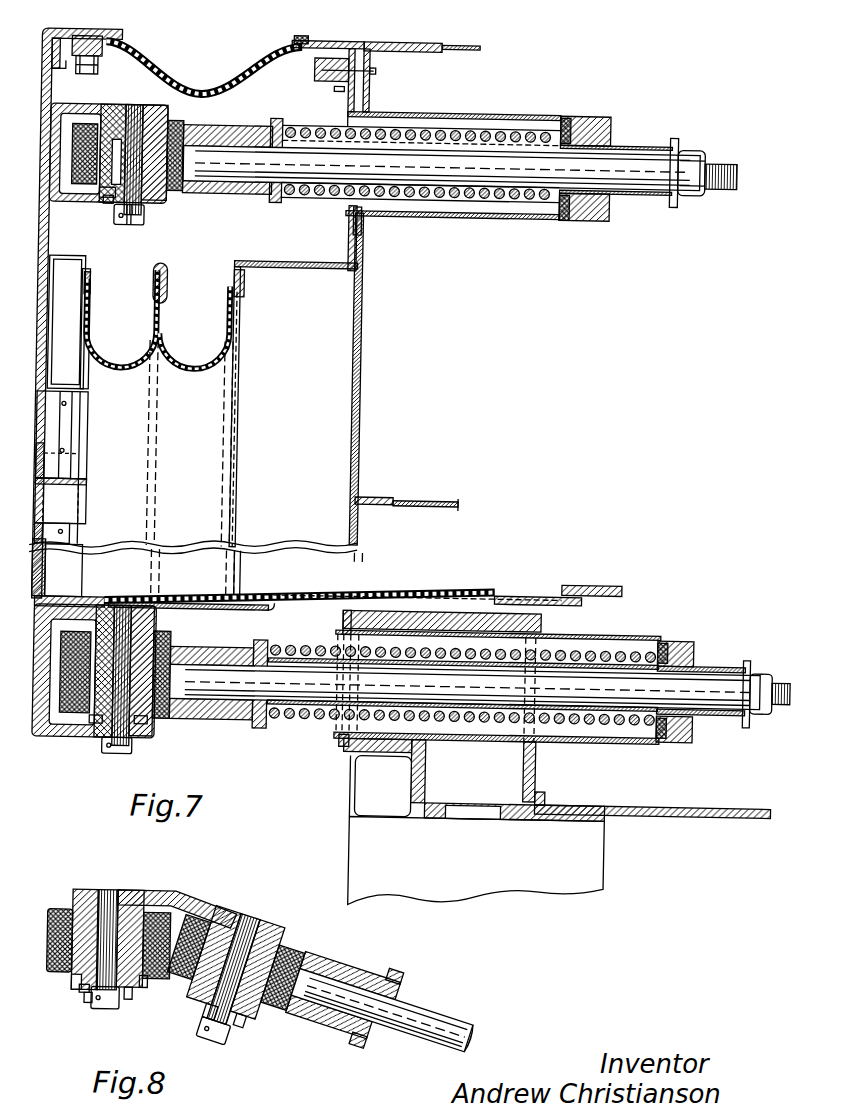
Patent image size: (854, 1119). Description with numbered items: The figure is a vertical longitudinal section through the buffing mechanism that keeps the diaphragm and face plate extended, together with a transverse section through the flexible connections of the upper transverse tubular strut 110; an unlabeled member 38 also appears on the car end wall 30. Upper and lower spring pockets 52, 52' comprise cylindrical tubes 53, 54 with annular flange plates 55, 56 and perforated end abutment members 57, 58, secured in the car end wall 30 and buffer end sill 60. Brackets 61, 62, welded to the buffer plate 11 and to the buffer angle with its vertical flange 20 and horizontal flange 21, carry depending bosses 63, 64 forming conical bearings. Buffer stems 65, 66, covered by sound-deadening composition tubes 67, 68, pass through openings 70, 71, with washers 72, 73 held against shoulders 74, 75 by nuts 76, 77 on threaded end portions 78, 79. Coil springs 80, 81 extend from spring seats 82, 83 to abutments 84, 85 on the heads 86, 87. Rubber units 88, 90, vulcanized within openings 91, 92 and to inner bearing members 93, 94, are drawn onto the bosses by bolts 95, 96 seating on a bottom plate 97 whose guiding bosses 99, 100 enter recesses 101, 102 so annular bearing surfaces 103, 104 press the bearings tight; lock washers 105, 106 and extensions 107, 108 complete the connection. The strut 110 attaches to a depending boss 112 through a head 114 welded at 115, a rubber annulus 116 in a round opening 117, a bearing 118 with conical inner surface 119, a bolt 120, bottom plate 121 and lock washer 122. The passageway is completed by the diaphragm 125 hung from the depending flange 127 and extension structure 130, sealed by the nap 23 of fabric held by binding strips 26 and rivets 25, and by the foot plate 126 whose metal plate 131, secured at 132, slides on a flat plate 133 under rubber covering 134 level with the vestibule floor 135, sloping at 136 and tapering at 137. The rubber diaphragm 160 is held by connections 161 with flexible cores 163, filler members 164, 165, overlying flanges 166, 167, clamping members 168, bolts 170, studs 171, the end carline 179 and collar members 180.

In FIG. 7, the buffer plate 11 is at (48, 238).
In FIG. 7, the vertical flange 20 is at (72, 500).
In FIG. 7, the horizontal flange 21 is at (77, 605).
In FIG. 7, the nap 23 is at (44, 335).
In FIG. 7, the rivets 25 is at (66, 453).
In FIG. 7, the binding strips 26 is at (44, 305).
In FIG. 7, the car end wall 30 is at (352, 368).
In FIG. 7, the bracket 38 is at (370, 500).
In FIG. 7, the upper spring pocket 52 is at (453, 180).
In FIG. 7, the lower spring pocket 52' is at (497, 691).
In FIG. 7, the cylindrical tube 53 is at (478, 114).
In FIG. 7, the cylindrical tube 54 is at (540, 740).
In FIG. 7, the annular flange plate 55 is at (350, 226).
In FIG. 7, the annular flange plate 56 is at (343, 748).
In FIG. 7, the end abutment member 57 is at (612, 222).
In FIG. 7, the end abutment member 58 is at (694, 744).
In FIG. 7, the buffer end sill 60 is at (352, 818).
In FIG. 7, the upper bracket 61 is at (132, 108).
In FIG. 8, the upper bracket 61 is at (140, 892).
In FIG. 7, the lower bracket 62 is at (62, 606).
In FIG. 7, the depending boss 63 is at (178, 128).
In FIG. 8, the depending boss 63 is at (142, 992).
In FIG. 7, the depending boss 64 is at (140, 752).
In FIG. 7, the buffer stem 65 is at (612, 150).
In FIG. 7, the buffer stem 66 is at (703, 667).
In FIG. 7, the sound-deadening composition tube 67 is at (650, 196).
In FIG. 7, the sound-deadening composition tube 68 is at (726, 716).
In FIG. 7, the opening 70 is at (592, 118).
In FIG. 7, the opening 71 is at (680, 660).
In FIG. 7, the washer 72 is at (675, 138).
In FIG. 7, the washer 73 is at (746, 660).
In FIG. 7, the shoulder 74 is at (672, 158).
In FIG. 7, the shoulder 75 is at (758, 673).
In FIG. 7, the nut 76 is at (694, 151).
In FIG. 7, the nut 77 is at (760, 713).
In FIG. 7, the threaded end portion 78 is at (738, 172).
In FIG. 7, the threaded end portion 79 is at (781, 682).
In FIG. 7, the coil spring 80 is at (433, 128).
In FIG. 7, the coil spring 81 is at (598, 722).
In FIG. 7, the spring seat 82 is at (556, 205).
In FIG. 7, the spring seat 83 is at (640, 640).
In FIG. 7, the abutment 84 is at (276, 201).
In FIG. 7, the abutment 85 is at (260, 726).
In FIG. 7, the buffer stem head 86 is at (218, 128).
In FIG. 8, the buffer stem head 86 is at (50, 920).
In FIG. 7, the buffer stem head 87 is at (216, 712).
In FIG. 7, the rubber unit 88 is at (172, 190).
In FIG. 8, the rubber unit 88 is at (72, 912).
In FIG. 7, the rubber unit 90 is at (162, 640).
In FIG. 7, the opening 91 is at (90, 125).
In FIG. 8, the opening 91 is at (62, 975).
In FIG. 7, the opening 92 is at (80, 730).
In FIG. 7, the inner bearing member 93 is at (114, 122).
In FIG. 8, the inner bearing member 93 is at (86, 890).
In FIG. 7, the inner bearing member 94 is at (160, 722).
In FIG. 7, the bolt 95 is at (147, 118).
In FIG. 8, the bolt 95 is at (128, 999).
In FIG. 7, the bolt 96 is at (115, 751).
In FIG. 7, the bottom plate 97 is at (78, 226).
In FIG. 8, the bottom plate 97 is at (85, 993).
In FIG. 7, the guiding boss 99 is at (106, 203).
In FIG. 8, the guiding boss 99 is at (90, 1003).
In FIG. 7, the guiding boss 100 is at (92, 724).
In FIG. 7, the recess 101 is at (152, 118).
In FIG. 8, the recess 101 is at (130, 893).
In FIG. 7, the recess 102 is at (174, 664).
In FIG. 7, the annular bearing surface 103 is at (162, 200).
In FIG. 8, the annular bearing surface 103 is at (146, 978).
In FIG. 7, the annular bearing surface 104 is at (152, 742).
In FIG. 7, the lock washer 105 is at (142, 220).
In FIG. 8, the lock washer 105 is at (102, 1009).
In FIG. 7, the lock washer 106 is at (135, 724).
In FIG. 7, the extension 107 is at (70, 205).
In FIG. 7, the extension 108 is at (60, 738).
In FIG. 8, the upper transverse tubular strut 110 is at (456, 1014).
In FIG. 8, the depending boss 112 is at (236, 925).
In FIG. 8, the head 114 is at (357, 965).
In FIG. 8, the weld 115 is at (398, 981).
In FIG. 8, the rubber annulus 116 is at (280, 1008).
In FIG. 8, the round opening 117 is at (297, 952).
In FIG. 8, the bearing 118 is at (286, 935).
In FIG. 8, the conical inner surface 119 is at (256, 1030).
In FIG. 8, the bolt 120 is at (235, 1030).
In FIG. 8, the bottom plate 121 is at (266, 1022).
In FIG. 8, the lock washer 122 is at (218, 1016).
In FIG. 7, the diaphragm 125 is at (176, 350).
In FIG. 7, the foot plate 126 is at (414, 585).
In FIG. 7, the depending flange 127 is at (84, 282).
In FIG. 7, the extension structure 130 is at (300, 265).
In FIG. 7, the metal plate 131 is at (378, 596).
In FIG. 7, the connection 132 is at (518, 595).
In FIG. 7, the flat plate 133 is at (286, 585).
In FIG. 7, the rubber covering 134 is at (445, 592).
In FIG. 7, the vestibule floor 135 is at (594, 592).
In FIG. 7, the slope 136 is at (215, 594).
In FIG. 7, the taper 137 is at (55, 597).
In FIG. 7, the diaphragm 160 is at (190, 88).
In FIG. 7, the connection 161 is at (318, 82).
In FIG. 7, the flexible core 163 is at (345, 43).
In FIG. 7, the filler member 164 is at (78, 26).
In FIG. 7, the filler member 165 is at (340, 93).
In FIG. 7, the overlying flange 166 is at (88, 37).
In FIG. 7, the overhanging flange plate 167 is at (300, 40).
In FIG. 7, the clamping member 168 is at (112, 50).
In FIG. 7, the bolt 170 is at (98, 64).
In FIG. 7, the stud 171 is at (374, 74).
In FIG. 7, the end carline 179 is at (428, 50).
In FIG. 7, the collar member 180 is at (362, 46).